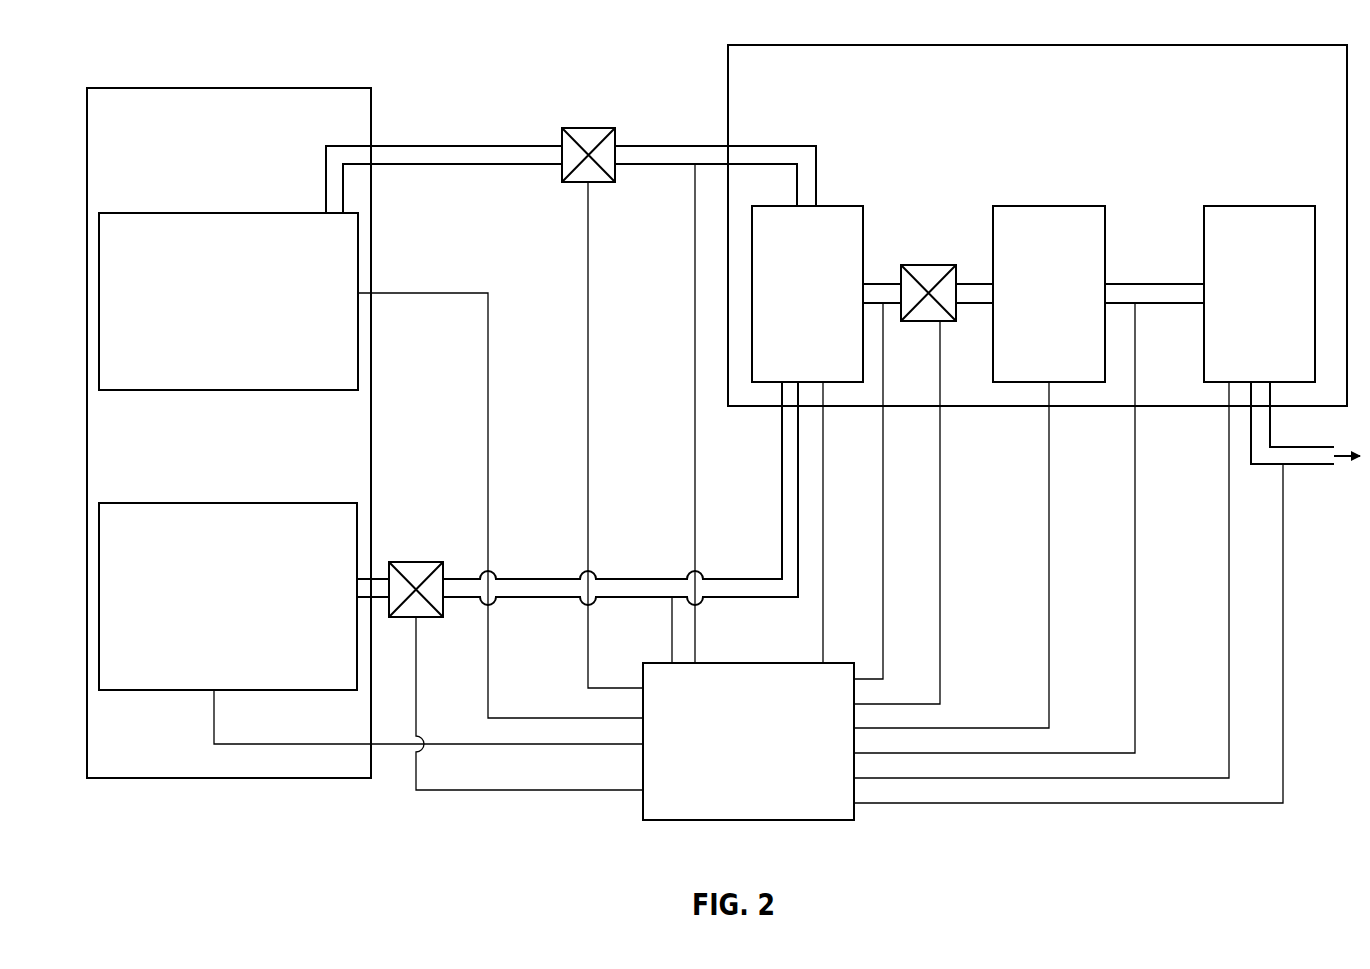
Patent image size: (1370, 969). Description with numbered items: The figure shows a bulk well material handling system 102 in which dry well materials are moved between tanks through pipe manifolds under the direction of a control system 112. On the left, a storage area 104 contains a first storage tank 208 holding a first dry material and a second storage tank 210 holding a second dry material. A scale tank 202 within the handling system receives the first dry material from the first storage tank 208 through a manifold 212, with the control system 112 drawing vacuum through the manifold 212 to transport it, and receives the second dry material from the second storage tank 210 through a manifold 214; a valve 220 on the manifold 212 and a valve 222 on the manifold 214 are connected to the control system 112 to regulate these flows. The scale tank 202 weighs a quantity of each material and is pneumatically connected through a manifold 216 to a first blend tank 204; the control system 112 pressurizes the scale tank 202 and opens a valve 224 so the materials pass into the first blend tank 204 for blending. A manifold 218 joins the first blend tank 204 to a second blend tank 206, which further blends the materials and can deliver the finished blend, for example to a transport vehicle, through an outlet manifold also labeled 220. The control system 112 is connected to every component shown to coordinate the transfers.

The bulk well material handling system 102 is at (790, 45).
The storage area 104 is at (150, 88).
The control system 112 is at (707, 820).
The scale tank 202 is at (832, 206).
The first blend tank 204 is at (1048, 206).
The second blend tank 206 is at (1258, 206).
The first storage tank 208 is at (168, 213).
The second storage tank 210 is at (168, 503).
The manifold 212 is at (488, 146).
The manifold 214 is at (470, 598).
The manifold 216 is at (890, 305).
The manifold 218 is at (1155, 305).
The valve 220 is at (585, 128).
The valve 222 is at (418, 562).
The valve 224 is at (928, 265).